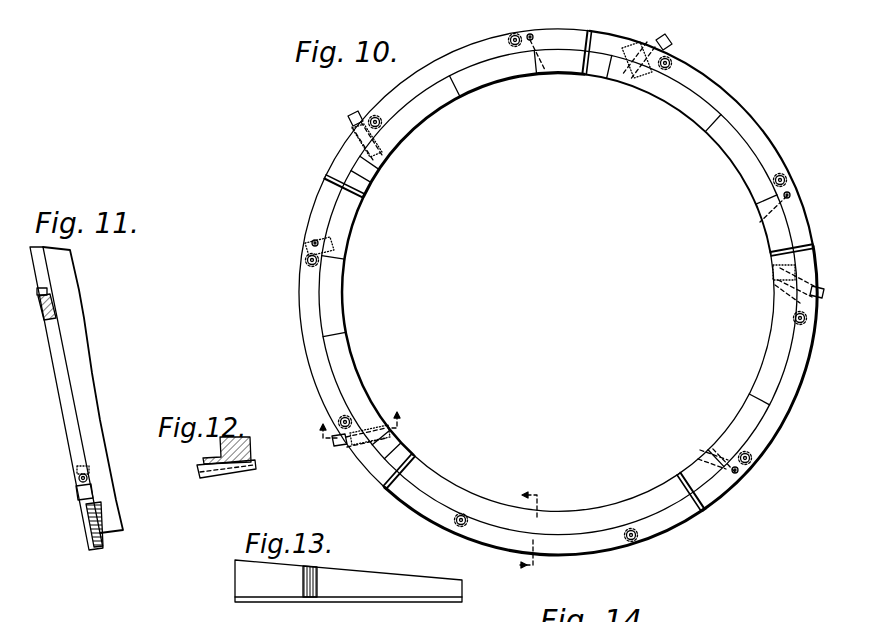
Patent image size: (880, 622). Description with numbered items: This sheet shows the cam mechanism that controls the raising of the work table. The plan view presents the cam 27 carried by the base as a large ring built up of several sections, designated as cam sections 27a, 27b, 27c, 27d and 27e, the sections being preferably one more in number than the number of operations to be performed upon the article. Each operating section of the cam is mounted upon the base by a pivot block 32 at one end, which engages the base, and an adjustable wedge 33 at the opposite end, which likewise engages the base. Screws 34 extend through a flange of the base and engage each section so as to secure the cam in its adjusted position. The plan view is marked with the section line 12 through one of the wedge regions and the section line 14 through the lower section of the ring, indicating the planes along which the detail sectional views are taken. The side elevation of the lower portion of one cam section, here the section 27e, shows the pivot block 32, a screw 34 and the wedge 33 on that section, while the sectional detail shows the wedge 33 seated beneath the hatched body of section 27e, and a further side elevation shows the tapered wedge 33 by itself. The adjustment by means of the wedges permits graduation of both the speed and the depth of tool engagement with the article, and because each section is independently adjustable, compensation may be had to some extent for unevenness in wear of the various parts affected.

In FIG. 10, the cam 27 is at (566, 283).
In FIG. 10, the cam section 27a is at (604, 546).
In FIG. 10, the cam section 27b is at (767, 445).
In FIG. 10, the cam section 27c is at (756, 131).
In FIG. 10, the cam section 27d is at (427, 77).
In FIG. 10, the cam section 27e is at (314, 345).
In FIG. 11, the cam section 27e is at (83, 382).
In FIG. 12, the cam section 27e is at (243, 437).
In FIG. 10, the pivot block 32 is at (775, 279).
In FIG. 11, the pivot block 32 is at (40, 312).
In FIG. 10, the adjustable wedge 33 is at (355, 117).
In FIG. 11, the adjustable wedge 33 is at (78, 497).
In FIG. 12, the adjustable wedge 33 is at (200, 478).
In FIG. 13, the adjustable wedge 33 is at (248, 586).
In FIG. 10, the screws 34 is at (323, 268).
In FIG. 11, the screws 34 is at (88, 478).
In FIG. 10, the section line 12- 12 is at (364, 419).
In FIG. 10, the section line 14- 14 is at (535, 531).